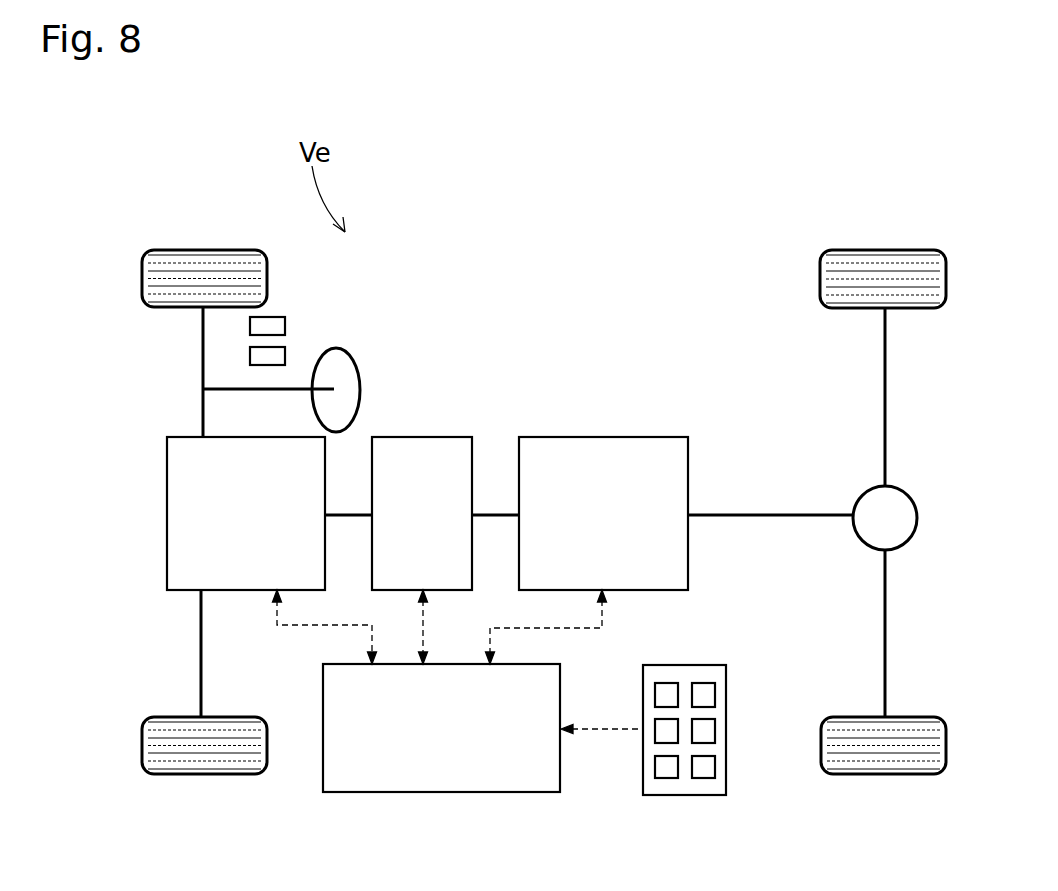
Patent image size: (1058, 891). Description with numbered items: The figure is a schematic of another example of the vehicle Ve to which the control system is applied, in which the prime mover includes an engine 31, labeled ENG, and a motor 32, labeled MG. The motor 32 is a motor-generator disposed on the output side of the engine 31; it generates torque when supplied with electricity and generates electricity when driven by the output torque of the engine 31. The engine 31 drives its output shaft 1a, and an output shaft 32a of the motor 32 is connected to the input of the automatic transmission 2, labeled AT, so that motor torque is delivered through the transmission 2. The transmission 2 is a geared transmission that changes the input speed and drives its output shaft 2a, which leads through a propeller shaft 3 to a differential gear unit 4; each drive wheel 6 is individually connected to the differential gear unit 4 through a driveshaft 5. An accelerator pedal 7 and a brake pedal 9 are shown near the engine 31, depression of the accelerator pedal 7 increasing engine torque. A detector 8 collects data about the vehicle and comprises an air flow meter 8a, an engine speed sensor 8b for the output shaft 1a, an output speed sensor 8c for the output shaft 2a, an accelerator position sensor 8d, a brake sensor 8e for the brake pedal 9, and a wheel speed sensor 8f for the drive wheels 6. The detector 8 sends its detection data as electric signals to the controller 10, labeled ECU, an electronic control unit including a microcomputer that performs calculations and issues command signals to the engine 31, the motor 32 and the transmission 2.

The engine 31 is at (167, 520).
The motor 32 is at (422, 437).
The automatic transmission 2 is at (606, 437).
The output shaft 1a is at (347, 513).
The output shaft 32a is at (497, 513).
The output shaft 2a is at (711, 513).
The propeller shaft 3 is at (795, 518).
The differential gear unit 4 is at (917, 518).
The driveshaft 5 is at (888, 405).
The drive wheel 6 is at (888, 250).
The accelerator pedal 7 is at (285, 326).
The brake pedal 9 is at (285, 355).
The controller 10 is at (450, 795).
The detector 8 is at (685, 797).
The air flow meter 8a is at (660, 697).
The engine speed sensor 8b is at (660, 733).
The output speed sensor 8c is at (665, 770).
The accelerator position sensor 8d is at (705, 695).
The brake sensor 8e is at (705, 730).
The wheel speed sensor 8f is at (705, 768).